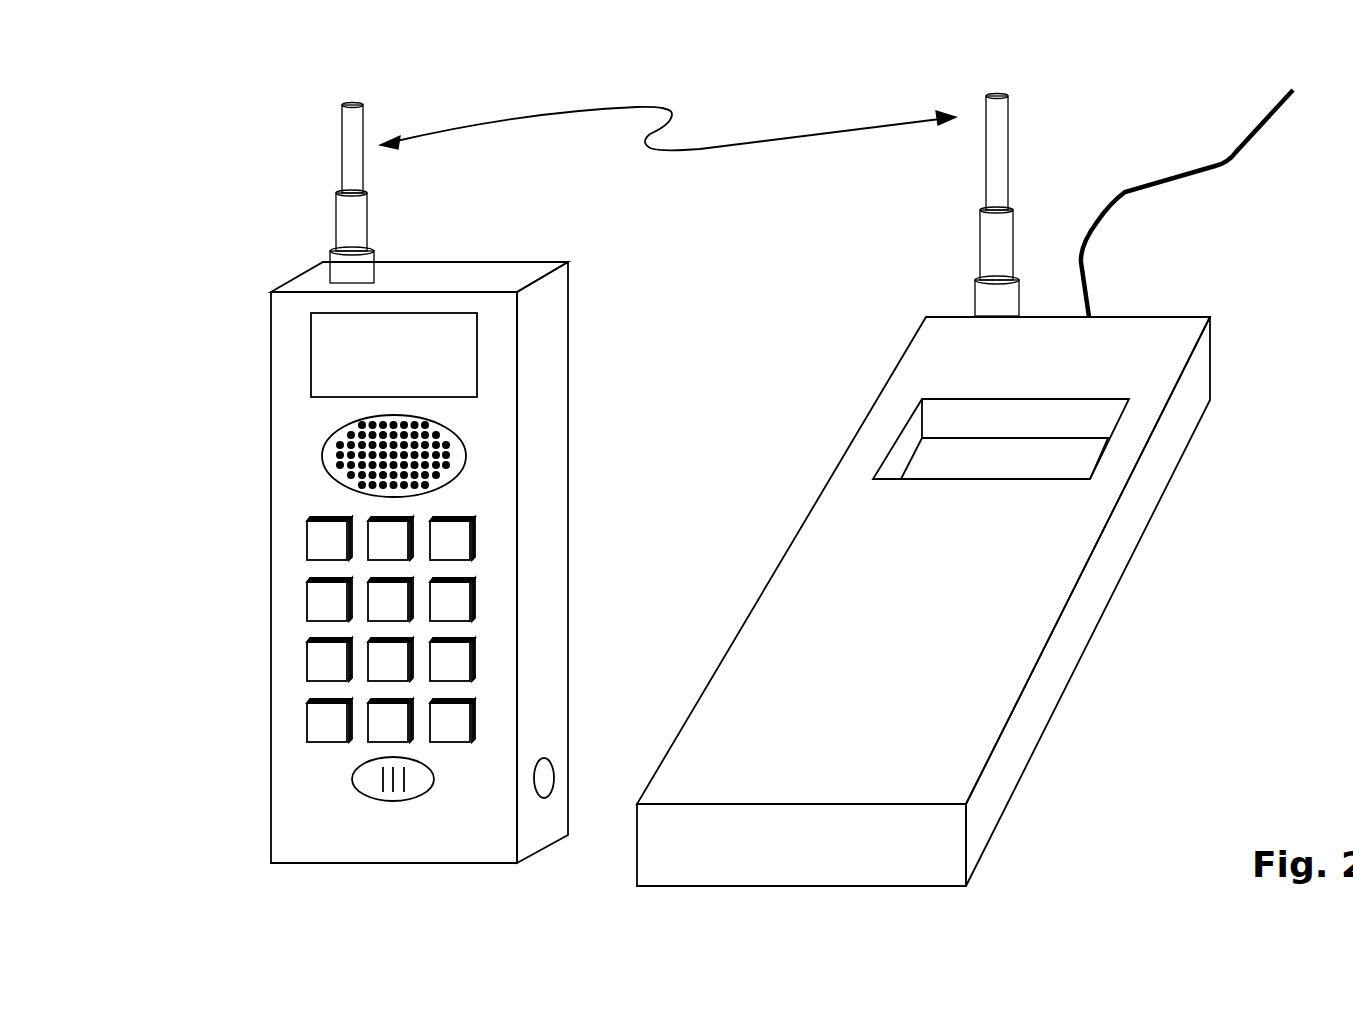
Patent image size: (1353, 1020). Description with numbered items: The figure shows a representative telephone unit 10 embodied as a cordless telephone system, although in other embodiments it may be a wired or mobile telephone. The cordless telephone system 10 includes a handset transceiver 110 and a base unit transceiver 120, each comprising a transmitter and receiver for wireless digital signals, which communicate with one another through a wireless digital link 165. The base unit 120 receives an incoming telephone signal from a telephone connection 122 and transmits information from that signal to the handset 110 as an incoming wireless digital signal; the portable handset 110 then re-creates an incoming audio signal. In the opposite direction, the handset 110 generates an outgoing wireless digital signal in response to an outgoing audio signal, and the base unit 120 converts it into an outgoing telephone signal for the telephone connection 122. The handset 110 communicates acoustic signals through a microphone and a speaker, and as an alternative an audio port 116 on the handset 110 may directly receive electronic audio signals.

The telephone unit 10 is at (1200, 695).
The handset transceiver 110 is at (455, 268).
The audio port 116 is at (556, 779).
The base unit transceiver 120 is at (1128, 328).
The telephone connection 122 is at (1233, 163).
The wireless digital link 165 is at (702, 153).